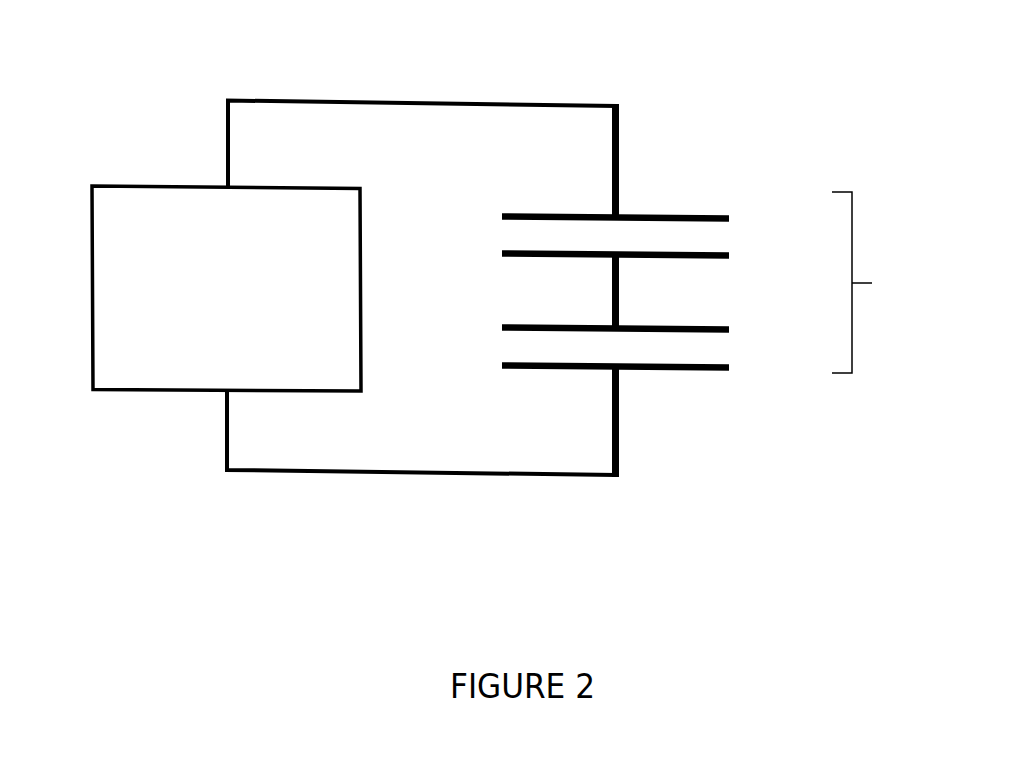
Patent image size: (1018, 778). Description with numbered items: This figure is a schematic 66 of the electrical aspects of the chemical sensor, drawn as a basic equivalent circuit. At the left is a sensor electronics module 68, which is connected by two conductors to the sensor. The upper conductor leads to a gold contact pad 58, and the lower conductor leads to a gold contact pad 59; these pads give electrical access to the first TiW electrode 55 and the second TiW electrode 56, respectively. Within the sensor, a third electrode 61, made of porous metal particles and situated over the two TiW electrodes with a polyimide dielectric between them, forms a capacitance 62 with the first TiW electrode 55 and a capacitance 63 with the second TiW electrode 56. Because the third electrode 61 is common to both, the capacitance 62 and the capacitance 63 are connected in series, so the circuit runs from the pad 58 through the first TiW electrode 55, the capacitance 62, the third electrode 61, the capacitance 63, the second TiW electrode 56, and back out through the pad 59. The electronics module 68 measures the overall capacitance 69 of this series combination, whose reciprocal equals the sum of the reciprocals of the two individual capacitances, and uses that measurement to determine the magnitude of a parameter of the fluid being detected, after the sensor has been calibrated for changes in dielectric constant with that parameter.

The schematic 66 is at (660, 47).
The gold contact pad 58 is at (617, 105).
The first TiW electrode 55 is at (617, 163).
The sensor electronics module 68 is at (253, 186).
The capacitance 62 is at (716, 216).
The third electrode 61 is at (616, 287).
The capacitance 63 is at (716, 368).
The capacitance 69 is at (872, 283).
The second TiW electrode 56 is at (617, 418).
The gold contact pad 59 is at (617, 476).